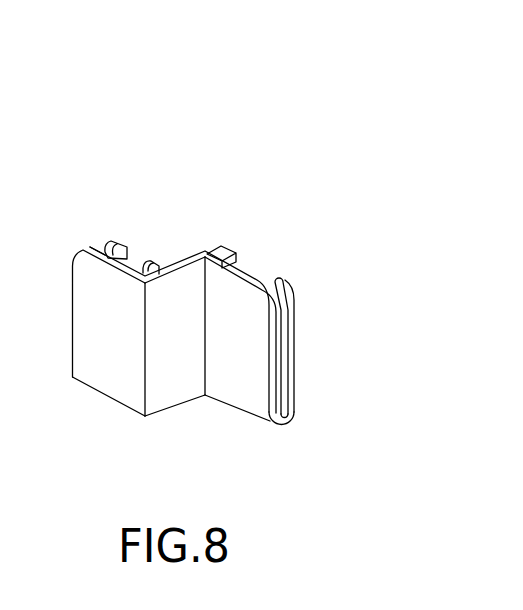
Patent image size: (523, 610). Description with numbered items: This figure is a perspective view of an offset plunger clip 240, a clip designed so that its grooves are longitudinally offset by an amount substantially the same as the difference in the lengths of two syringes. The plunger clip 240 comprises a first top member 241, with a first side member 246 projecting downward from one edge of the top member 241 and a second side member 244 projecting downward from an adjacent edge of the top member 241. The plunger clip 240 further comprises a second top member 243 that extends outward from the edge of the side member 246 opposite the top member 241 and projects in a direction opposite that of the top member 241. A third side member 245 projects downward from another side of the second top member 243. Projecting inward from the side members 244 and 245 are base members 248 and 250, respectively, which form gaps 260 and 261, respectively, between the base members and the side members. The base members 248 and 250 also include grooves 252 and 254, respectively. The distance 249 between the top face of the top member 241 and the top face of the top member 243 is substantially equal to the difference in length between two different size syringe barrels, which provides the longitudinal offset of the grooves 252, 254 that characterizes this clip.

The offset plunger clip 240 is at (203, 145).
The first top member 241 is at (122, 392).
The second top member 243 is at (259, 410).
The second side member 244 is at (88, 386).
The third side member 245 is at (287, 421).
The first side member 246 is at (177, 392).
The base member 248 is at (127, 246).
The distance 249 is at (173, 255).
The base member 250 is at (287, 296).
The groove 252 is at (138, 252).
The groove 254 is at (248, 267).
The gap 260 is at (102, 245).
The gap 261 is at (284, 398).